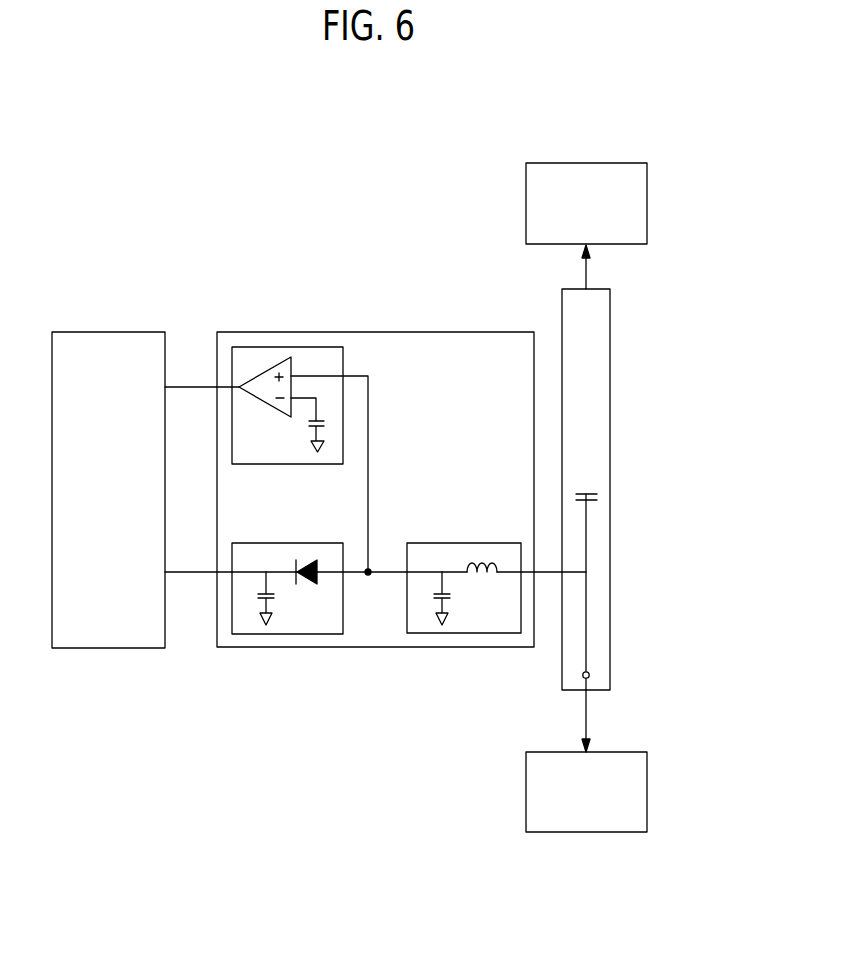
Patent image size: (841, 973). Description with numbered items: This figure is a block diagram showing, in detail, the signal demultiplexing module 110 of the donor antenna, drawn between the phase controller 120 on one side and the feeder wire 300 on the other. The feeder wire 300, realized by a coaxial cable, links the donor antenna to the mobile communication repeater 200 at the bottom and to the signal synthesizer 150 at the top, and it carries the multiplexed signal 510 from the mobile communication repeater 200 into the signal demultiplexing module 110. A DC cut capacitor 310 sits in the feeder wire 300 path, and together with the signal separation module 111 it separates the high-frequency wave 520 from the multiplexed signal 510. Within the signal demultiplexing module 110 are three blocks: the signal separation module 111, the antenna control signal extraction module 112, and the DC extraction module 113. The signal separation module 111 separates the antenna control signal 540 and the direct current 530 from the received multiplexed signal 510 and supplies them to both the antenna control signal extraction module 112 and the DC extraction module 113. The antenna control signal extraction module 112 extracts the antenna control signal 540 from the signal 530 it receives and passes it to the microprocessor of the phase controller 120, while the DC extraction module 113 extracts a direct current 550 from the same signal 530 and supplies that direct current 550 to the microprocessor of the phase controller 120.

The signal demultiplexing module 110 is at (402, 332).
The signal separation module 111 is at (485, 633).
The antenna control signal extraction module 112 is at (266, 347).
The DC extraction module 113 is at (288, 634).
The phase controller 120 is at (108, 490).
The signal synthesizer 150 is at (586, 203).
The mobile communication repeater 200 is at (586, 792).
The feeder wire 300 is at (611, 357).
The DC cut capacitor 310 is at (597, 496).
The multiplexed signal 510 is at (589, 675).
The high-frequency wave 520 is at (587, 422).
The direct current 530 is at (368, 572).
The antenna control signal 540 is at (190, 383).
The direct current 550 is at (190, 573).